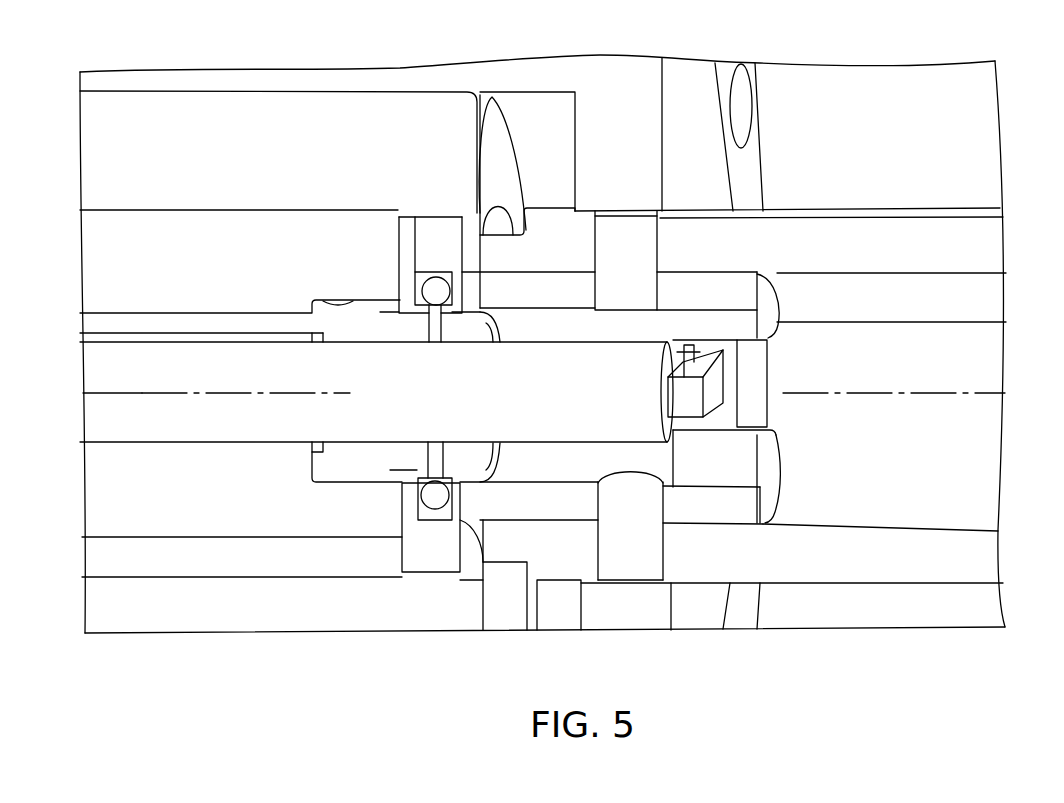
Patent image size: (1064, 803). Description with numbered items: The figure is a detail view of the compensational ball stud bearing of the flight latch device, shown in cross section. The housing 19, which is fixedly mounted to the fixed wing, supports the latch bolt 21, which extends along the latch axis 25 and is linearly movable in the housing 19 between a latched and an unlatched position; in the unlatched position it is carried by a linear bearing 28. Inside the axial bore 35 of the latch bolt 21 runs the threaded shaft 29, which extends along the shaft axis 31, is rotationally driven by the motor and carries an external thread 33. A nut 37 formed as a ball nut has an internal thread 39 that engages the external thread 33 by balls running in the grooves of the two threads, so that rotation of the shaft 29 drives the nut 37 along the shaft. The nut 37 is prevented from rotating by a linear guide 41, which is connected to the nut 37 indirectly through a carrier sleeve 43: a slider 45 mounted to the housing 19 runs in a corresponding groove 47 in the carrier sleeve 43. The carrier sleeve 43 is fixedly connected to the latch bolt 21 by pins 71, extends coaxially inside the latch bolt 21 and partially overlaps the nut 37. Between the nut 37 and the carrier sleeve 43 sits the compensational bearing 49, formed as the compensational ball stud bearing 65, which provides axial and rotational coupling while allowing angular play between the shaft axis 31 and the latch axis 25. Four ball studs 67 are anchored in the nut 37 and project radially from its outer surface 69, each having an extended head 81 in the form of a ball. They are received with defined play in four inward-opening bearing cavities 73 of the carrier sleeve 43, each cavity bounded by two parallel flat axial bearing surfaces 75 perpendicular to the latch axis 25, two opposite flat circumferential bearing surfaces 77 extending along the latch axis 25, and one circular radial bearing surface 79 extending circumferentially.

The housing 19 is at (607, 80).
The latch bolt 21 is at (950, 248).
The latch axis 25 is at (837, 398).
The linear bearing 28 is at (93, 120).
The threaded shaft 29 is at (103, 423).
The shaft axis 31 is at (103, 390).
The external thread 33 is at (168, 343).
The axial bore 35 is at (890, 480).
The nut 37 is at (353, 468).
The internal thread 39 is at (343, 443).
The linear guide 41 is at (822, 310).
The carrier sleeve 43 is at (535, 295).
The slider 45 is at (693, 348).
The groove 47 is at (752, 377).
The compensational bearing 49 is at (456, 169).
The compensational ball stud bearing 65 is at (523, 260).
The ball studs 67 is at (436, 495).
The outer surface 69 is at (477, 285).
The pins 71 is at (633, 233).
The bearing cavities 73 is at (428, 513).
The axial bearing surfaces 75 is at (435, 293).
The circumferential bearing surfaces 77 is at (430, 277).
The radial bearing surface 79 is at (452, 300).
The extended head 81 is at (413, 272).